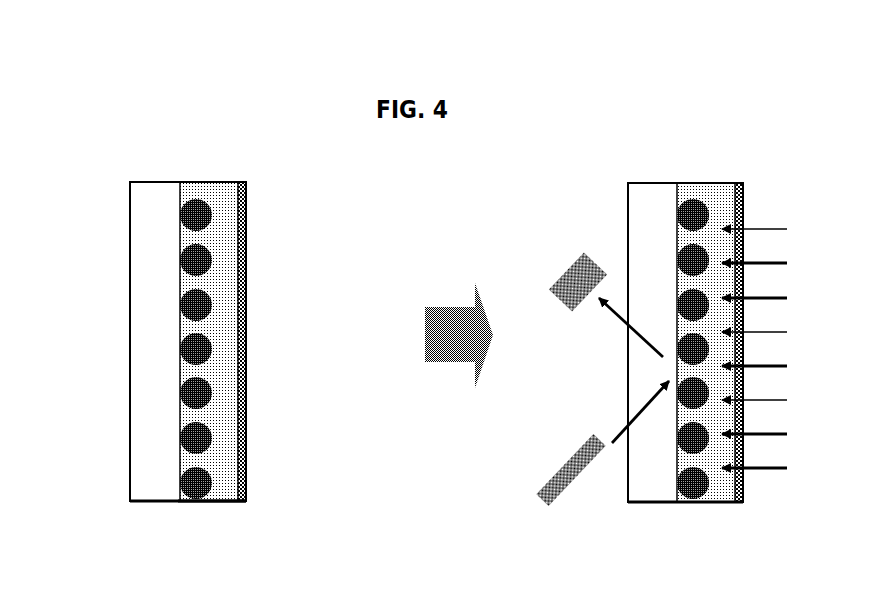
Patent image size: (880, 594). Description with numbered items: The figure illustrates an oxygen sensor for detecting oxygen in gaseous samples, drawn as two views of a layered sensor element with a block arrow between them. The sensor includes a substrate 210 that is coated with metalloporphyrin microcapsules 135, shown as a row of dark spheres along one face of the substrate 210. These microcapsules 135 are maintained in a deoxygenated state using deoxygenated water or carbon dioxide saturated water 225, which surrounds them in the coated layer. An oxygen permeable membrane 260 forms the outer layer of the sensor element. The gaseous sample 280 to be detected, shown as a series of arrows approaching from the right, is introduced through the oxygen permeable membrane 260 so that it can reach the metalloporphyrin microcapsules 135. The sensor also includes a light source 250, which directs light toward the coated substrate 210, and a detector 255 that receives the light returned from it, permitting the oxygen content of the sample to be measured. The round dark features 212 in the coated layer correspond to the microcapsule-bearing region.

The substrate 210 is at (157, 272).
The particles 212 is at (186, 372).
The deoxygenated water or carbon dioxide saturated water 225 is at (223, 317).
The oxygen permeable membrane 260 is at (247, 336).
The metalloporphyrin microcapsules 135 is at (190, 486).
The light source 250 is at (582, 457).
The detector 255 is at (592, 299).
The gaseous sample 280 is at (760, 330).